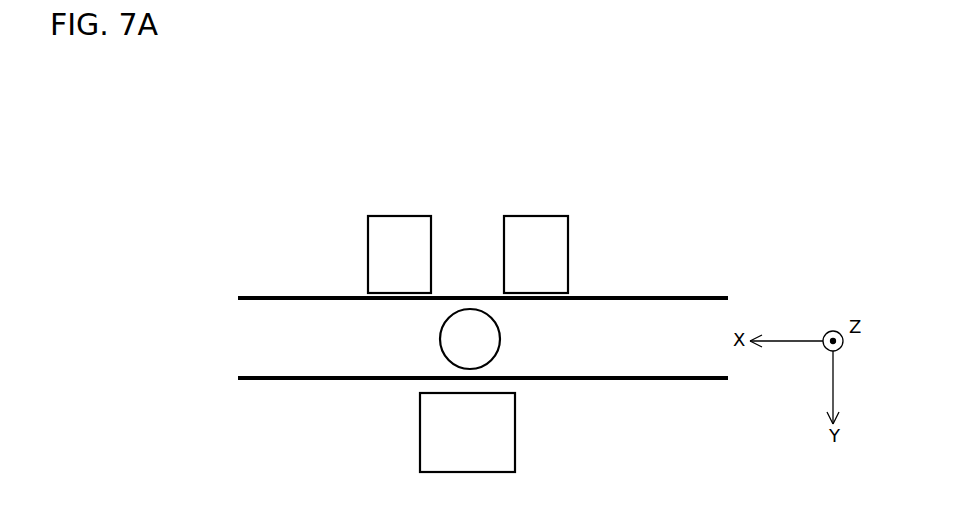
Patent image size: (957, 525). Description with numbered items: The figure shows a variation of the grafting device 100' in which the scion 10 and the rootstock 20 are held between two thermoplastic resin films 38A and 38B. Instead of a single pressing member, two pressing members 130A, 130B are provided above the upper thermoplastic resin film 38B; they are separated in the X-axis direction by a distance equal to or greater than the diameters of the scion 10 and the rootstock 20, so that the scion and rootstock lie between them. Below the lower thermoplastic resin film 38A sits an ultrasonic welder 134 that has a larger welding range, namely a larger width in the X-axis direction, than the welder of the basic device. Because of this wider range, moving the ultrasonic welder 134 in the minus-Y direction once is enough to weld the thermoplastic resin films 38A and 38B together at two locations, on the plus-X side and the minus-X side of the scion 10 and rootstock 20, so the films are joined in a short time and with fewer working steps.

The scion 10 is at (411, 339).
The rootstock 20 is at (440, 340).
The thermoplastic resin film 38A is at (316, 382).
The thermoplastic resin film 38B is at (316, 296).
The pressing member 130A is at (399, 216).
The pressing member 130B is at (548, 216).
The ultrasonic welder 134 is at (515, 440).
The grafting device 100' is at (661, 168).